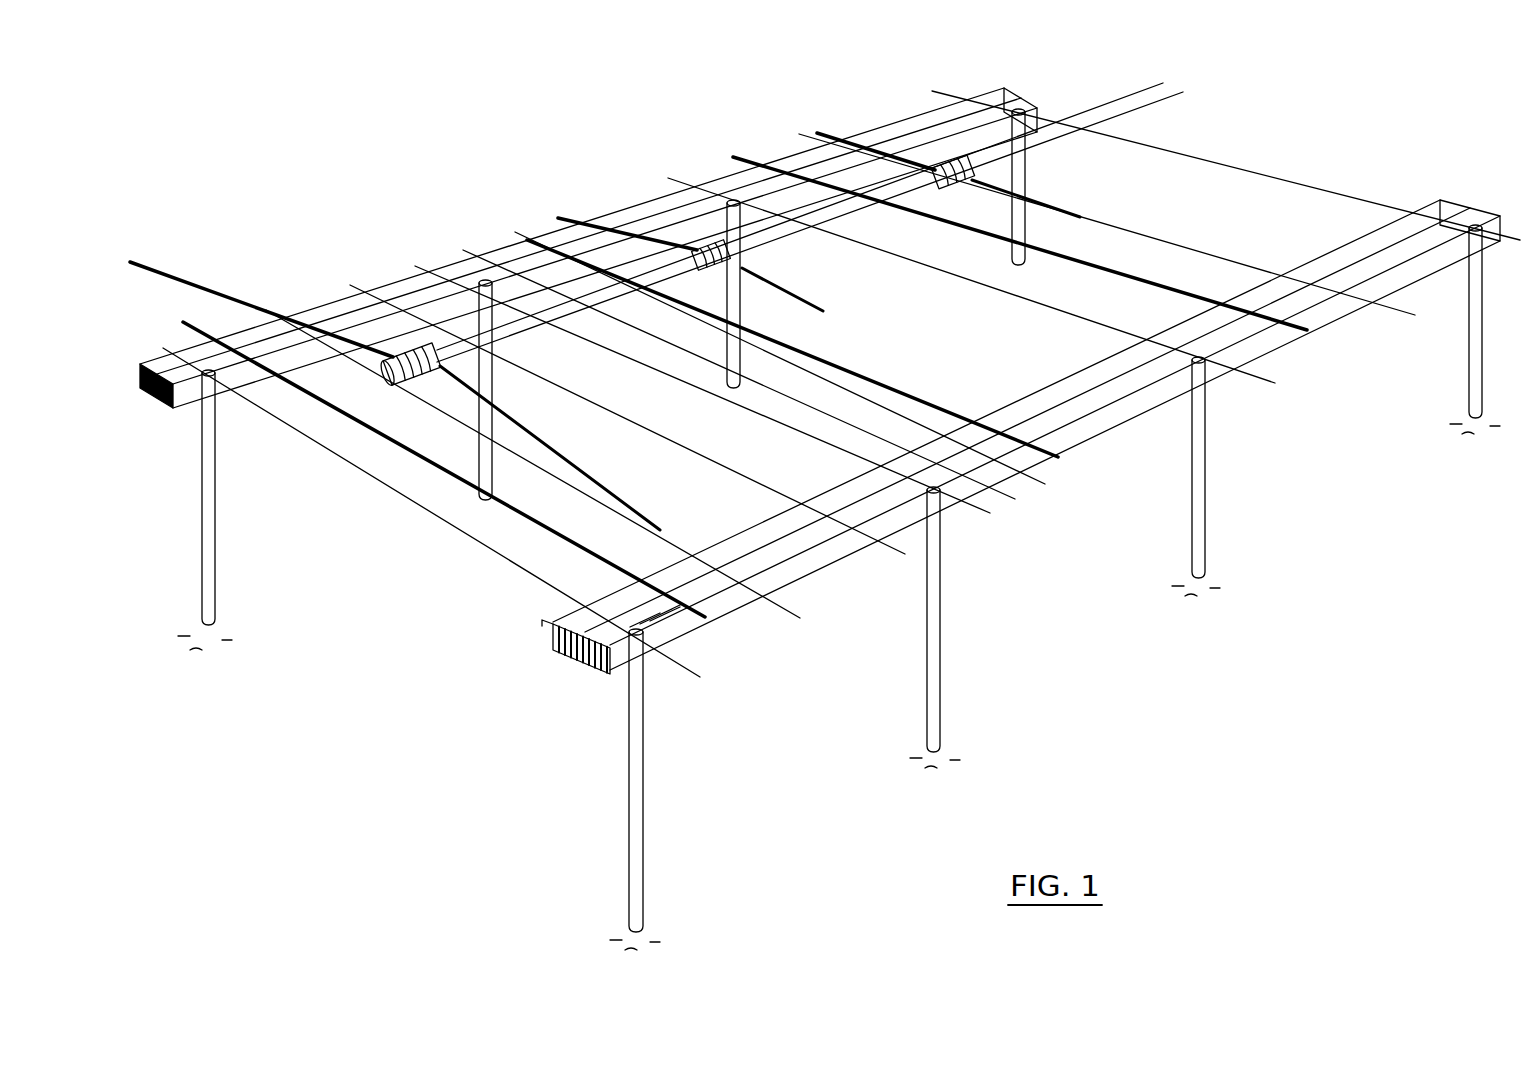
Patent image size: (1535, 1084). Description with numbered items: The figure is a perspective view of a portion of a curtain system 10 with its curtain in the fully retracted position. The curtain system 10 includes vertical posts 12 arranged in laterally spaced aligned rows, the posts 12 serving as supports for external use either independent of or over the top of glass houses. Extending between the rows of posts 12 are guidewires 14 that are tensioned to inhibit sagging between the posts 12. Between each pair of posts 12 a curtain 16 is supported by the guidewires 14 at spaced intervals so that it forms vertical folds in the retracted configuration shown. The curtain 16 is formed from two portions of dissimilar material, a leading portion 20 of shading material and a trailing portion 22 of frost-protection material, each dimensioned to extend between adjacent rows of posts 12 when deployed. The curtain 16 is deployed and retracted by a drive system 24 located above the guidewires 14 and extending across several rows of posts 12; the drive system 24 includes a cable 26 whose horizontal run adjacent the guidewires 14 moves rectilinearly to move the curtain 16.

The curtain system 10 is at (455, 572).
The vertical posts 12 is at (1028, 182).
The guidewires 14 is at (1243, 168).
The curtain 16 is at (575, 686).
The leading portion 20 is at (550, 653).
The trailing portion 22 is at (617, 693).
The drive system 24 is at (772, 236).
The cable 26 is at (1110, 275).